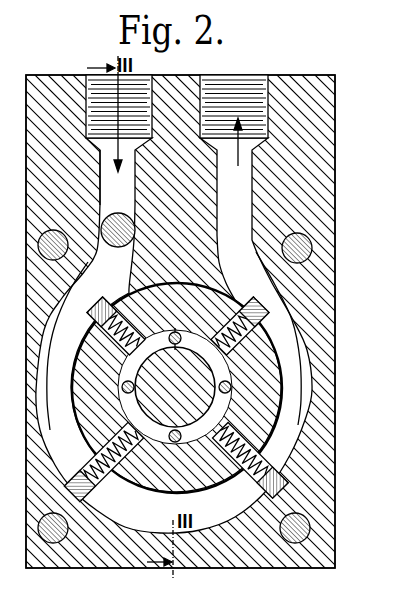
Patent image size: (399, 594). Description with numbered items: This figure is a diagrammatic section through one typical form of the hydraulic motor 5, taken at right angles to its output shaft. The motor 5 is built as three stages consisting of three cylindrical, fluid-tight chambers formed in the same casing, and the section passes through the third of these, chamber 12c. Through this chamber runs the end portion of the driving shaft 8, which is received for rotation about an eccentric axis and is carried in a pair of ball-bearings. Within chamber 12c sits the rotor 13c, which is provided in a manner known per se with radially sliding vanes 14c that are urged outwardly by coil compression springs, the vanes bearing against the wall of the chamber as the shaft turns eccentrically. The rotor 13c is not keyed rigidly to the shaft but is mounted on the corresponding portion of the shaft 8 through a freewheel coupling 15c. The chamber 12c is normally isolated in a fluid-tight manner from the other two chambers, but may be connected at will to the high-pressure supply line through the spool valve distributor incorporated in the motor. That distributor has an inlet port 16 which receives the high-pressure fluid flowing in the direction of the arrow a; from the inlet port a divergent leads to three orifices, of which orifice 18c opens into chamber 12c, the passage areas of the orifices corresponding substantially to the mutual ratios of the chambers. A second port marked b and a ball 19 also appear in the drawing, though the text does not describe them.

The hydraulic motor 5 is at (305, 92).
The inlet port 16 is at (90, 104).
The orifice 18c is at (103, 167).
The check ball 19 is at (118, 270).
The freewheel coupling 15c is at (192, 332).
The driving shaft 8 is at (223, 413).
The cylindrical fluid-tight chamber 12c is at (147, 530).
The rotor 13c is at (216, 487).
The radially sliding vanes 14c is at (252, 487).
The direction of high-pressure fluid flow a is at (123, 122).
The outlet flow direction b is at (232, 147).